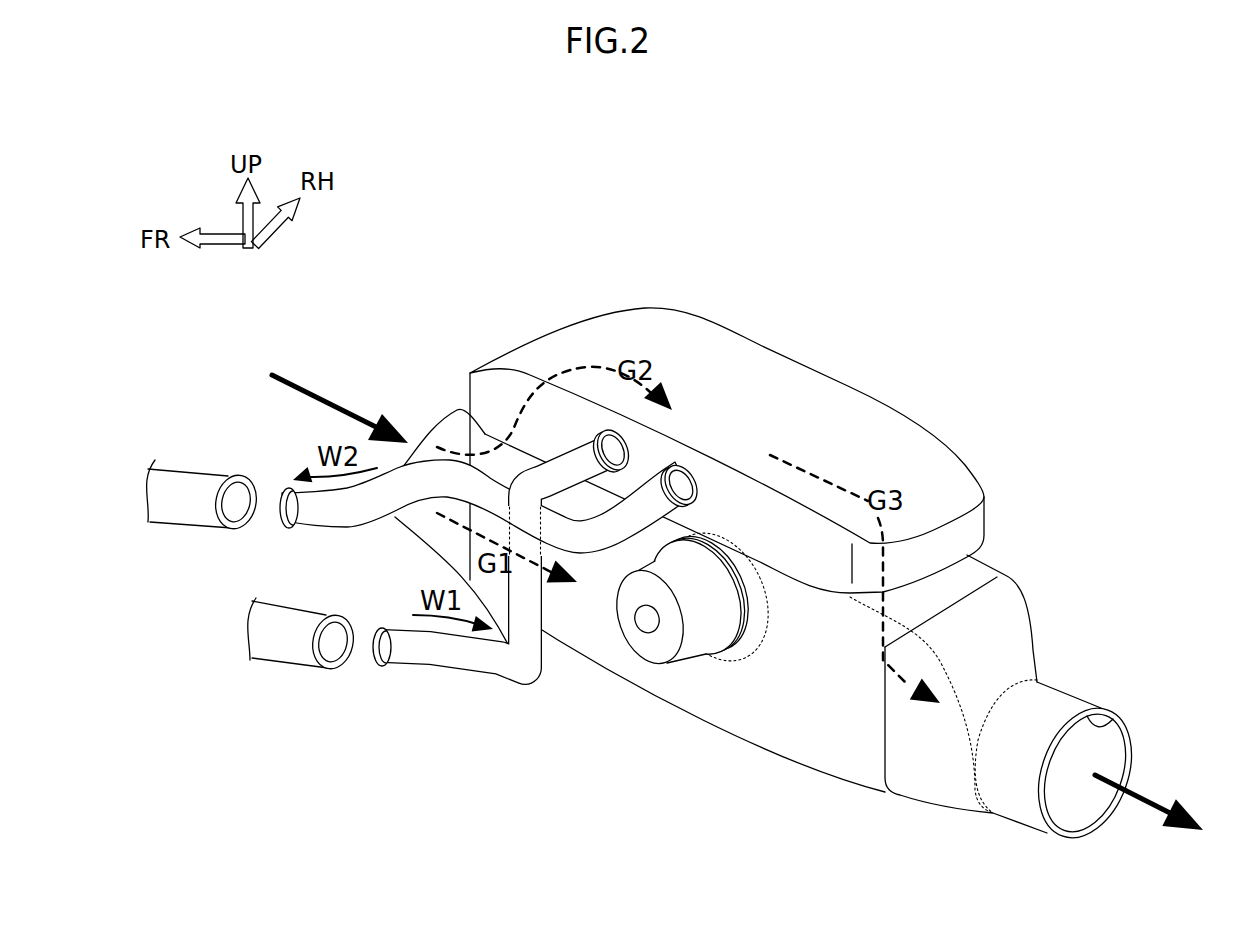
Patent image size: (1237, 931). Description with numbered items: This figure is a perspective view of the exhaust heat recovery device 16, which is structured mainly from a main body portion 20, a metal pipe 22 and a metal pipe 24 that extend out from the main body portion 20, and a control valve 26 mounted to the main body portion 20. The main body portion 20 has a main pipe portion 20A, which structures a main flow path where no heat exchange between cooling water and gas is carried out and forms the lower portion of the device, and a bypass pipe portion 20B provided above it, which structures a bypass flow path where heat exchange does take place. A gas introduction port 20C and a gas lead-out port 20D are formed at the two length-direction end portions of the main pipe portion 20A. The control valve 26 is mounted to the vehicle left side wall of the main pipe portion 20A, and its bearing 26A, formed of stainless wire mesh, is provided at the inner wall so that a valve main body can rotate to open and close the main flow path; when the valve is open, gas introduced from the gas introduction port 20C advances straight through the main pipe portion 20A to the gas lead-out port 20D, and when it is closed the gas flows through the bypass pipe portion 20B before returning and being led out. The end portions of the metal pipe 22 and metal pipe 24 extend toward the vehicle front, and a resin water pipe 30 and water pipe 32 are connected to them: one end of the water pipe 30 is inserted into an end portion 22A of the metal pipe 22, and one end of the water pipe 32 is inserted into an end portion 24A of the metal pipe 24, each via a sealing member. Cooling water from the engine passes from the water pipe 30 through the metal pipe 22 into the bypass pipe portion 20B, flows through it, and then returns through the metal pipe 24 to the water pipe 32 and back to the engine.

The exhaust heat recovery device 16 is at (685, 522).
The main body portion 20 is at (806, 522).
The main pipe portion 20A is at (660, 692).
The bypass pipe portion 20B is at (625, 307).
The gas introduction port 20C is at (417, 432).
The gas lead-out port 20D is at (1117, 707).
The metal pipe 22 is at (504, 595).
The end portion of the metal pipe 22A is at (381, 666).
The metal pipe 24 is at (491, 544).
The end portion of the metal pipe 24A is at (282, 526).
The control valve 26 is at (673, 662).
The bearing 26A is at (750, 637).
The water pipe 30 is at (297, 663).
The water pipe 32 is at (197, 527).